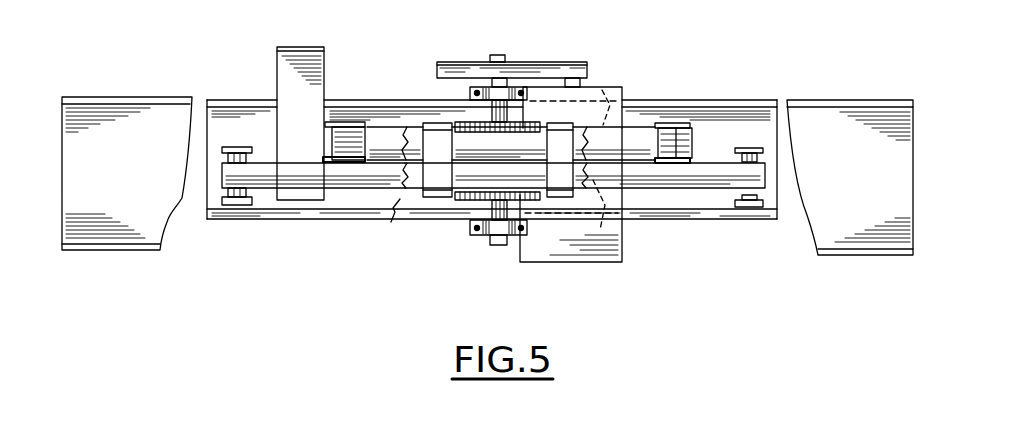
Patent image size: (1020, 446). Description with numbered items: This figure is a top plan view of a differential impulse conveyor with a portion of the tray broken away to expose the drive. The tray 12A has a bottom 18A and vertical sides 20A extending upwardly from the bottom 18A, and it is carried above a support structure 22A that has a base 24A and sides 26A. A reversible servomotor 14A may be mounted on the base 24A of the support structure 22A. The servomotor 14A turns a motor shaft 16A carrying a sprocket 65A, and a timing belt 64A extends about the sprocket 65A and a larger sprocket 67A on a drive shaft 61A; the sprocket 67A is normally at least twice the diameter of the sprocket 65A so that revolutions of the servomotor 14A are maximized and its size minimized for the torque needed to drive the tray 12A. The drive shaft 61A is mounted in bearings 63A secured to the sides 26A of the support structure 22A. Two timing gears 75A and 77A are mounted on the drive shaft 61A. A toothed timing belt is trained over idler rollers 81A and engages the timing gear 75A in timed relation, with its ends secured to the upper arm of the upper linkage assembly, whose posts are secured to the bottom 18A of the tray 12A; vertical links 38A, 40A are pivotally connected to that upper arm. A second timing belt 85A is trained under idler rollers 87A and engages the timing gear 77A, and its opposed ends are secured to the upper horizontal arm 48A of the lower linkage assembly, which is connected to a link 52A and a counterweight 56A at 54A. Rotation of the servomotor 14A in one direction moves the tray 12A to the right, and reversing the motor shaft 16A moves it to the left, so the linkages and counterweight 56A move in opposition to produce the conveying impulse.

The tray 12A is at (848, 106).
The reversible servomotor 14A is at (562, 263).
The motor shaft 16A is at (577, 86).
The bottom 18A is at (143, 194).
The vertical sides 20A is at (88, 98).
The support structure 22A is at (275, 220).
The base 24A is at (399, 200).
The sides 26A is at (375, 221).
The vertical link 38A is at (208, 207).
The vertical link 40A is at (760, 206).
The upper horizontal arm 48A is at (387, 140).
The link 52A is at (690, 126).
The connection point 54A is at (330, 124).
The counterweight 56A is at (292, 62).
The drive shaft 61A is at (493, 233).
The bearings 63A is at (484, 236).
The timing belt 64A is at (530, 67).
The sprocket 65A is at (553, 85).
The sprocket 67A is at (463, 61).
The timing gear 75A is at (542, 197).
The timing gear 77A is at (528, 133).
The idler rollers 81A is at (428, 208).
The timing belt 85A is at (688, 186).
The idler rollers 87A is at (437, 137).